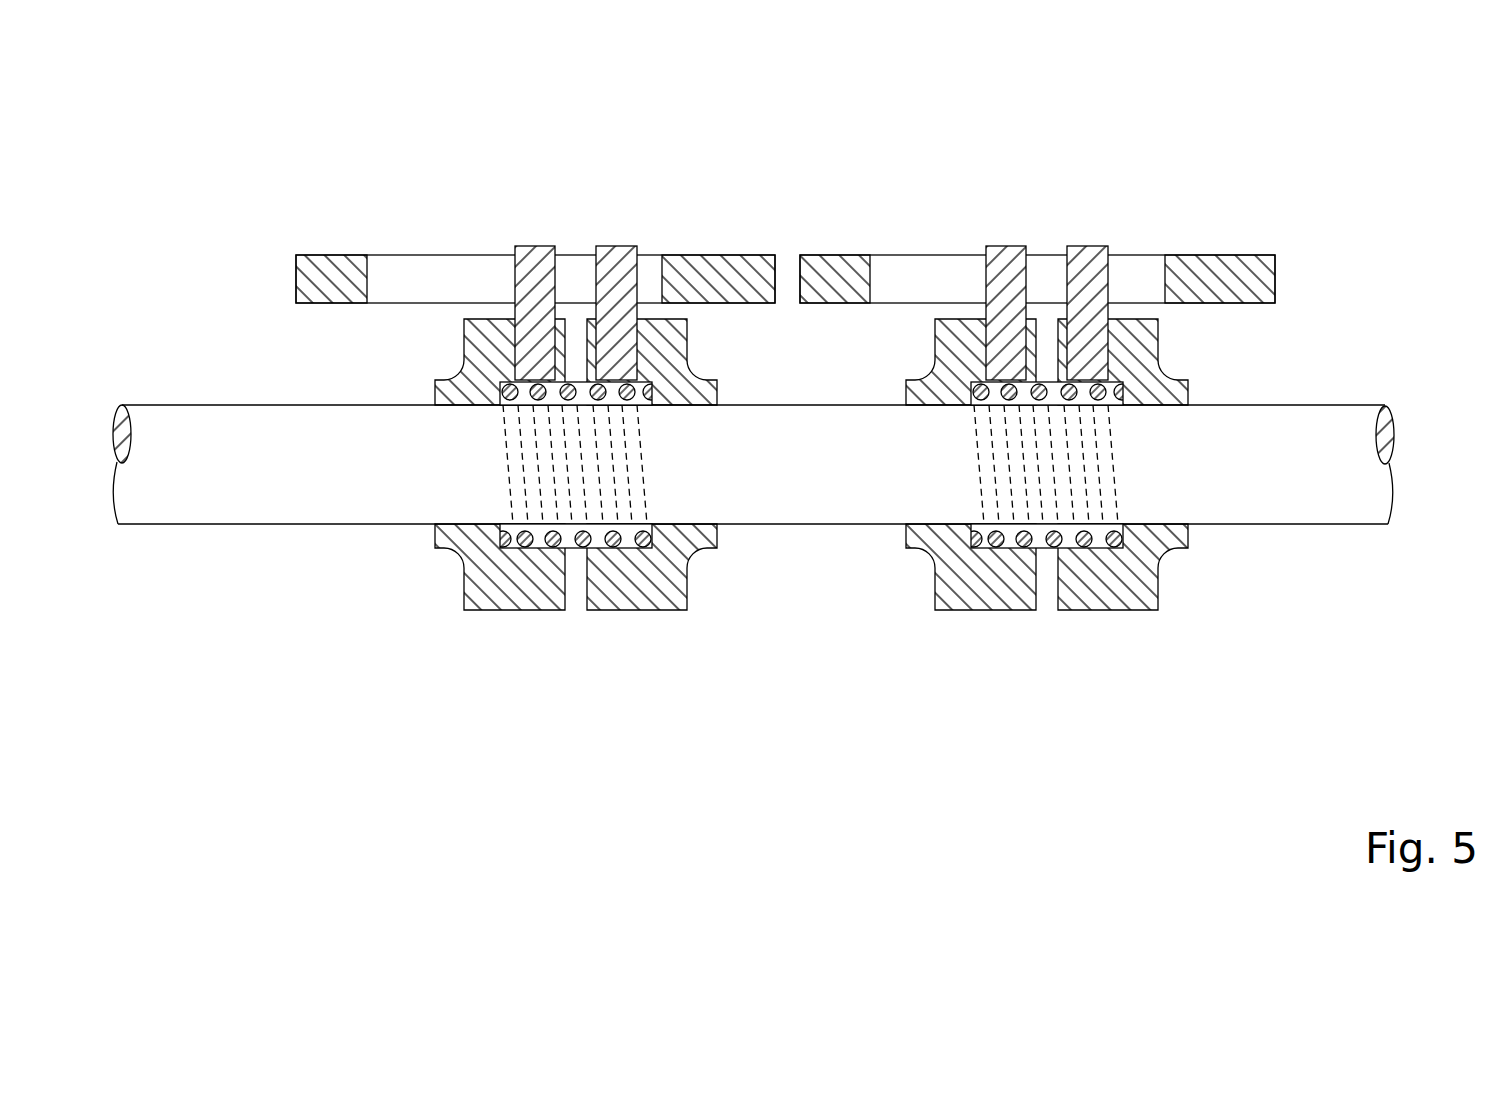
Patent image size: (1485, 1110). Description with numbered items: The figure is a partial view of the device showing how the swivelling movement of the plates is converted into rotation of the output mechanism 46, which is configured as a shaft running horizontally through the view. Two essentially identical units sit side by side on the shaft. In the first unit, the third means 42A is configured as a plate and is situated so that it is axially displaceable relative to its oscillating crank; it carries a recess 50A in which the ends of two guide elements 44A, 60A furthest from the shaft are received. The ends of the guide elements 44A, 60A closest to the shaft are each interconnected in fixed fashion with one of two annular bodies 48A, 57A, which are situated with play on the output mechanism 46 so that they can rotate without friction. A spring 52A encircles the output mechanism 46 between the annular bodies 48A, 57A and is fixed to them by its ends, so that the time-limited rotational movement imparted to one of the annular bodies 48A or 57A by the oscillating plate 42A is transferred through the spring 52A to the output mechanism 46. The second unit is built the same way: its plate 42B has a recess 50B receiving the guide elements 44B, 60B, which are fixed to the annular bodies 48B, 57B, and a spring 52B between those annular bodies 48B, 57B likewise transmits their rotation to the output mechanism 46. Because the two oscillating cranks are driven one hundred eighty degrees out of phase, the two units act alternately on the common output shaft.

The third means 42A is at (327, 277).
The third means 42B is at (842, 273).
The guide element 44A is at (533, 268).
The guide element 44B is at (1007, 265).
The output mechanism 46 is at (275, 462).
The annular body 48A is at (513, 590).
The annular body 48B is at (962, 583).
The recess 50A is at (433, 272).
The recess 50B is at (937, 280).
The spring 52A is at (635, 477).
The spring 52B is at (1048, 547).
The annular body 57A is at (642, 583).
The annular body 57B is at (1100, 582).
The guide element 60A is at (612, 287).
The guide element 60B is at (1083, 270).